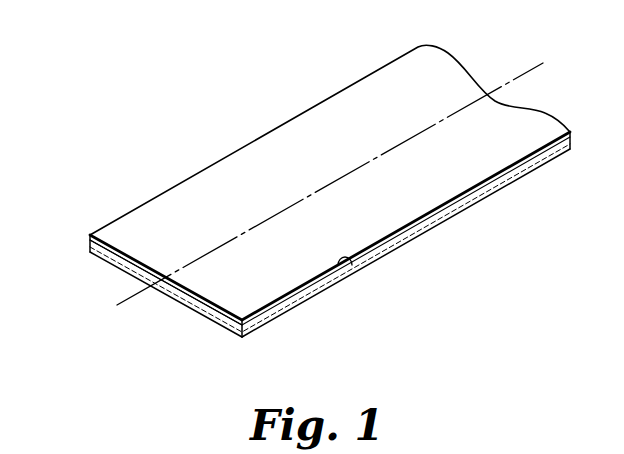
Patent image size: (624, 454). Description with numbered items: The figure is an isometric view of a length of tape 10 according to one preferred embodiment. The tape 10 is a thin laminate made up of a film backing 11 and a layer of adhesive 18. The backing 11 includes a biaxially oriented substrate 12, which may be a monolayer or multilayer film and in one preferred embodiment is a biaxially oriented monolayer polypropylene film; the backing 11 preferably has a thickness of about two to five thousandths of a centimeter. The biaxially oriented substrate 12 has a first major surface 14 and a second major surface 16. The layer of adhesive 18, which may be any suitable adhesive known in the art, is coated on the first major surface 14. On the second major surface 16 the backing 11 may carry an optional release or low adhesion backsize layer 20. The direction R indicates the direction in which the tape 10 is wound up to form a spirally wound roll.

The tape 10 is at (310, 70).
The film backing 11 is at (89, 234).
The biaxially oriented substrate 12 is at (213, 312).
The first major surface 14 is at (306, 302).
The second major surface 16 is at (353, 264).
The layer of adhesive 18 is at (250, 334).
The low adhesion backsize layer 20 is at (130, 222).
The winding direction R is at (526, 73).